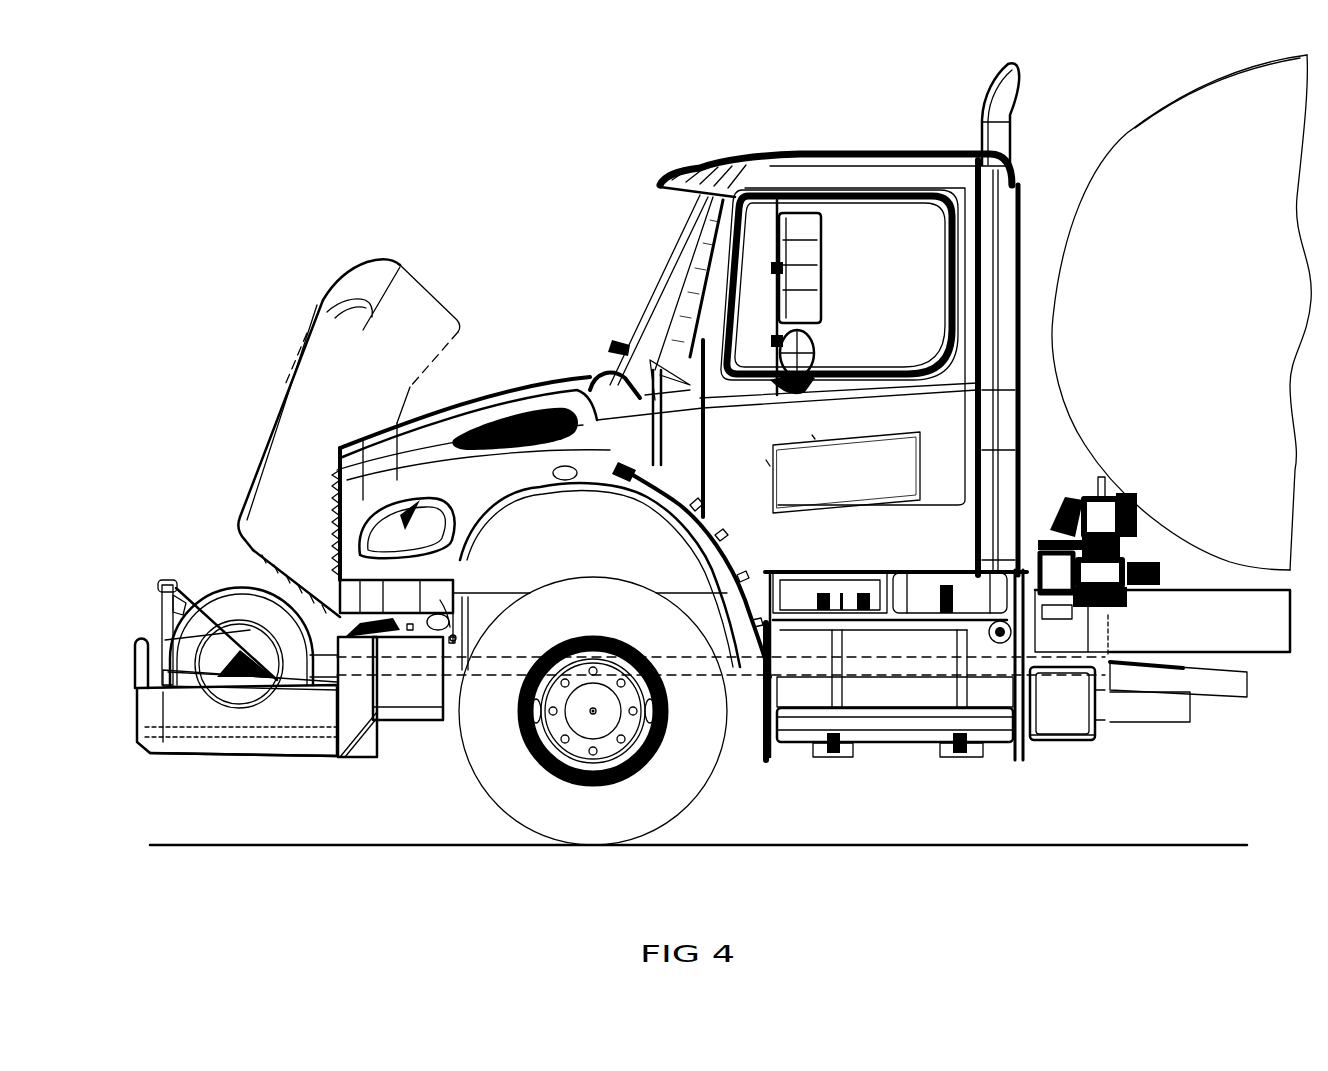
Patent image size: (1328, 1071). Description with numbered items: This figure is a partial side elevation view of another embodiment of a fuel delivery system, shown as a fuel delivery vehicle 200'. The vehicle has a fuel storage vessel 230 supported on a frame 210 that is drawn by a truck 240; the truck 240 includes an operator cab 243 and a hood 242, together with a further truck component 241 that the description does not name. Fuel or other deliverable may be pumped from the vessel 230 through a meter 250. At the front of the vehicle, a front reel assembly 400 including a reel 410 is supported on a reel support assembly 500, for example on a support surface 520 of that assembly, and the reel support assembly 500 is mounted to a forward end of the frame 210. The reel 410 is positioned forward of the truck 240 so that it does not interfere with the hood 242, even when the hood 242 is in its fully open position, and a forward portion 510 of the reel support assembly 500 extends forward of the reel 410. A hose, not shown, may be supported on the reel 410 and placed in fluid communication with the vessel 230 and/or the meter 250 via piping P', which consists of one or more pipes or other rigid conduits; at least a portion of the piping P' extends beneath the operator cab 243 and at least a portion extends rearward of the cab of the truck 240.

The fuel delivery vehicle 200' is at (604, 399).
The frame 210 is at (495, 590).
The fuel storage vessel 230 is at (1104, 158).
The truck 240 is at (740, 160).
The lower hood 241 is at (490, 385).
The hood 242 is at (315, 311).
The operator cab 243 is at (643, 297).
The meter 250 is at (1157, 563).
The front reel assembly 400 is at (102, 580).
The reel 410 is at (157, 582).
The reel support assembly 500 is at (129, 752).
The forward portion 510 is at (134, 733).
The support surface 520 is at (290, 755).
The piping P' is at (692, 751).